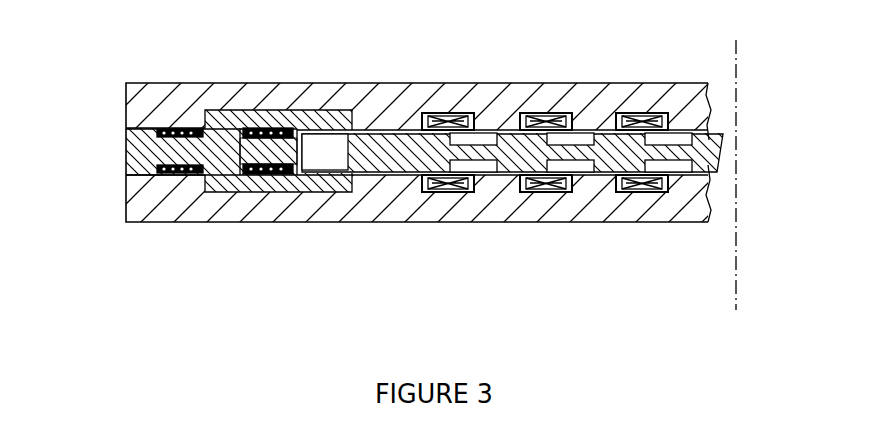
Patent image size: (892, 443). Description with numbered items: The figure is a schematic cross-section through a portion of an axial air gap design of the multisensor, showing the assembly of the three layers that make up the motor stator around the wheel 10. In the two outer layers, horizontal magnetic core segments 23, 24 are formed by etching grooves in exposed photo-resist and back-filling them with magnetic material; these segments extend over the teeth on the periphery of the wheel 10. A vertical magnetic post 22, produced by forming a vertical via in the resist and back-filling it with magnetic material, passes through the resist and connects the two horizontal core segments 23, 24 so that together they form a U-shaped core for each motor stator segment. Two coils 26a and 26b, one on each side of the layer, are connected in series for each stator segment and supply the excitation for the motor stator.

The wheel 10 is at (719, 148).
The vertical magnetic post 22 is at (216, 144).
The horizontal magnetic core segment 23 is at (312, 118).
The horizontal magnetic core segment 24 is at (270, 182).
The coil 26a is at (172, 178).
The coil 26b is at (172, 128).